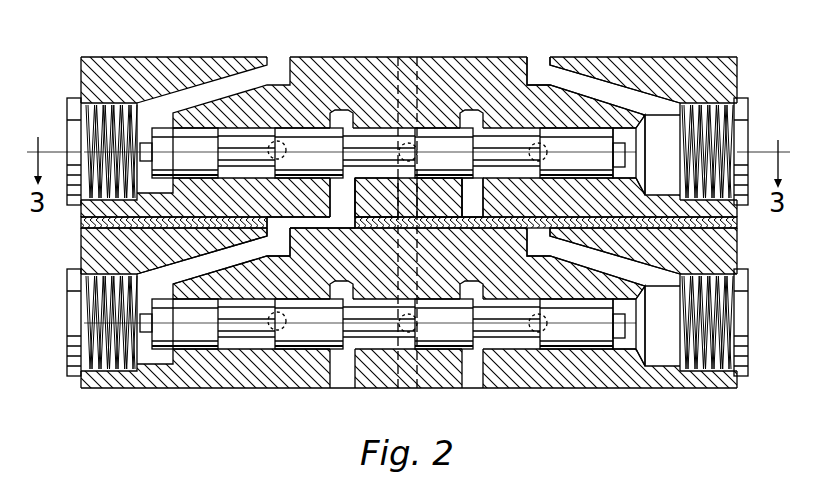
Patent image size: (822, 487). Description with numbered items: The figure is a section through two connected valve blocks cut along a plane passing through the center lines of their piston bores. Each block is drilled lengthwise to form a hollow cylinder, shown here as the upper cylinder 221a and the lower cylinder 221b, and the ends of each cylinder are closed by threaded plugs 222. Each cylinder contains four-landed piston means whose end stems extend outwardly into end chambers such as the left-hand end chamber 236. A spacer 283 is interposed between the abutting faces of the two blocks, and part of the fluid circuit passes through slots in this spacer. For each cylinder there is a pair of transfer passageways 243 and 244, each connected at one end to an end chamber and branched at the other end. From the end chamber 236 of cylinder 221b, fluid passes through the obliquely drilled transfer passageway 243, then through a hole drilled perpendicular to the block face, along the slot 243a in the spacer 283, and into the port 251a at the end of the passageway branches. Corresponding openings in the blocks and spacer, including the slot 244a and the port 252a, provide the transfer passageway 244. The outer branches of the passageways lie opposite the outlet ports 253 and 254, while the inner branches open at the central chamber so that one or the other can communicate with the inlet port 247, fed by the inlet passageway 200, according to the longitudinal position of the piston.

The inlet passageway 200 is at (421, 62).
The threaded plug 222 is at (70, 122).
The end chamber 236 is at (163, 182).
The cylinder 221a is at (258, 120).
The cylinder 221b is at (256, 296).
The transfer passageway 243 is at (182, 263).
The slot 243a is at (306, 201).
The transfer passageway 244 is at (595, 85).
The slot 244a is at (515, 218).
The inlet port 247 is at (410, 380).
The port 251a is at (347, 204).
The port 252a is at (470, 208).
The outlet port 253 is at (263, 340).
The outlet port 254 is at (553, 148).
The spacer 283 is at (740, 229).